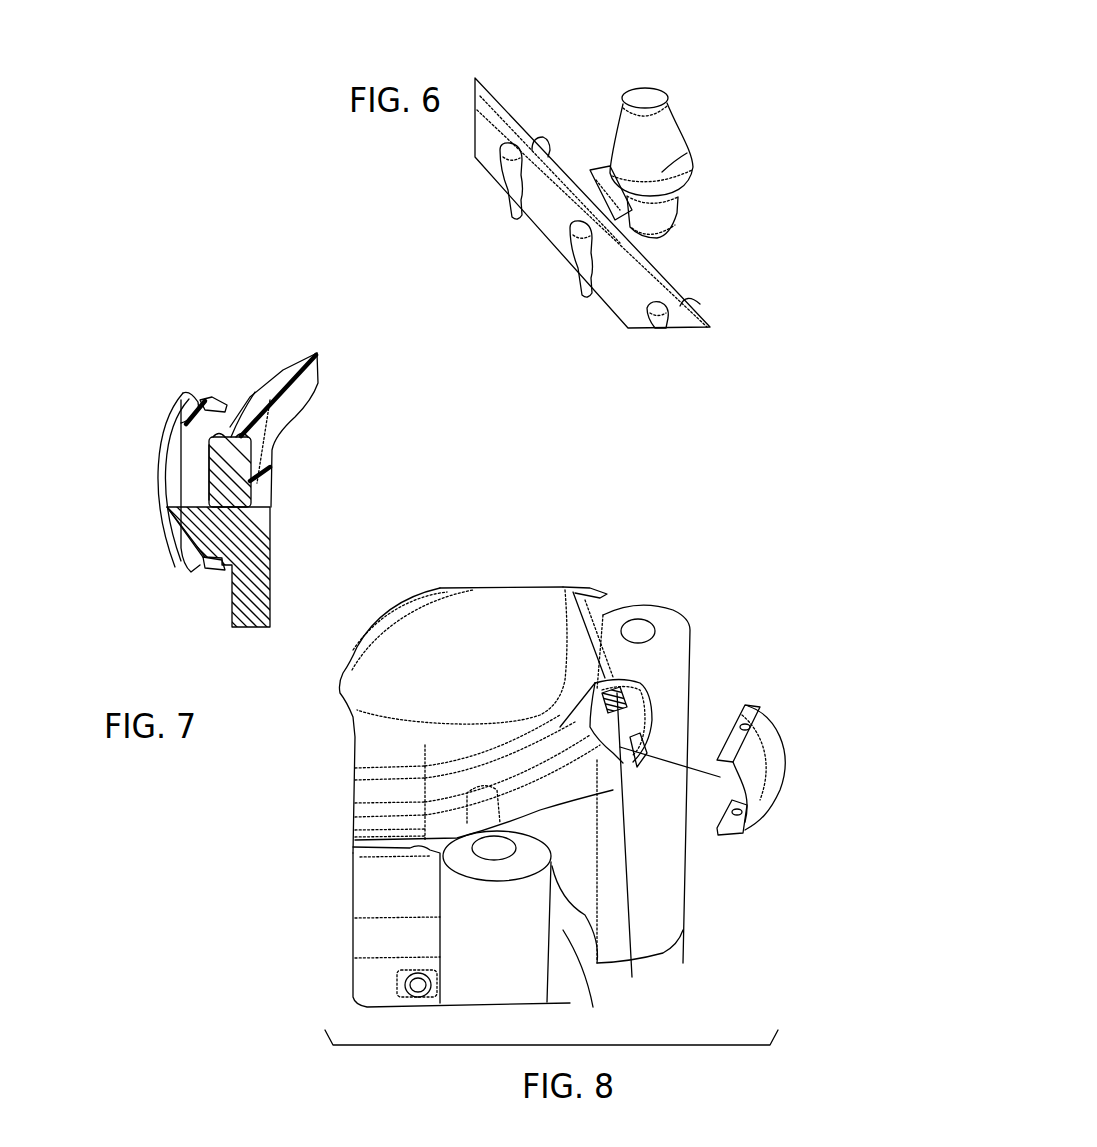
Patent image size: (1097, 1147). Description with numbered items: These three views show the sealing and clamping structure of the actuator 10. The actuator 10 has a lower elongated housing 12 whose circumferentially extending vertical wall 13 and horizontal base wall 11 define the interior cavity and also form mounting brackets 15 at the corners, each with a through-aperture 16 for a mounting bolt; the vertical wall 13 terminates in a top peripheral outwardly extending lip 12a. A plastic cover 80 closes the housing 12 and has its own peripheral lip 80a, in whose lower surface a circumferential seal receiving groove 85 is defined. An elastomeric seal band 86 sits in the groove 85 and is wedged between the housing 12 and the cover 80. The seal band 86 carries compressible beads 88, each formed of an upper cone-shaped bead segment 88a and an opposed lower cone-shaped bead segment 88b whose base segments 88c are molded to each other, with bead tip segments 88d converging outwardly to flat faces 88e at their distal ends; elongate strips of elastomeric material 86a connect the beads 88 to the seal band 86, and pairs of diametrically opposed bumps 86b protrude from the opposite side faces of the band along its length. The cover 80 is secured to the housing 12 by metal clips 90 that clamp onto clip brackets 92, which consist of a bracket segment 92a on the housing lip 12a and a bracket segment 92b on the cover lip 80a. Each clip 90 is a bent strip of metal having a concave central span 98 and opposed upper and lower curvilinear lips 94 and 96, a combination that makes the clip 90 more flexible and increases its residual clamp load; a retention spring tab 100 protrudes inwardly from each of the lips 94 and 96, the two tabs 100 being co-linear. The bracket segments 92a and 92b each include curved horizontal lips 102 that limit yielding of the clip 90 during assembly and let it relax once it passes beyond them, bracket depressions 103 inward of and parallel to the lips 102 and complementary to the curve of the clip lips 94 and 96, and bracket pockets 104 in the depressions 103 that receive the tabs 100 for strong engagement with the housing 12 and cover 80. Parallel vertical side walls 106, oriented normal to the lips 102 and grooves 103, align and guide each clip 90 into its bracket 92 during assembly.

In FIG. 7, the actuator 10 is at (185, 332).
In FIG. 8, the actuator 10 is at (540, 578).
In FIG. 8, the horizontal base wall 11 is at (668, 957).
In FIG. 7, the housing 12 is at (206, 585).
In FIG. 8, the housing 12 is at (537, 733).
In FIG. 7, the lip 12a is at (212, 525).
In FIG. 8, the lip 12a is at (378, 845).
In FIG. 7, the vertical wall 13 is at (247, 593).
In FIG. 8, the vertical wall 13 is at (563, 930).
In FIG. 8, the mounting brackets 15 is at (473, 923).
In FIG. 8, the through-aperture 16 is at (487, 855).
In FIG. 7, the cover 80 is at (212, 381).
In FIG. 8, the cover 80 is at (440, 662).
In FIG. 7, the lip 80a is at (253, 395).
In FIG. 8, the lip 80a is at (390, 812).
In FIG. 7, the seal receiving groove 85 is at (182, 422).
In FIG. 6, the seal band 86 is at (603, 222).
In FIG. 7, the seal band 86 is at (205, 488).
In FIG. 6, the elongate strips of elastomeric material 86a is at (593, 192).
In FIG. 6, the bumps 86b is at (545, 143).
In FIG. 6, the beads 88 is at (703, 160).
In FIG. 6, the upper cone-shaped compressible bead segment 88a is at (663, 175).
In FIG. 6, the lower cone-shaped compressible bead segment 88b is at (683, 203).
In FIG. 6, the base segments 88c is at (680, 157).
In FIG. 6, the bead tip segments 88d is at (658, 132).
In FIG. 6, the flat faces 88e is at (645, 100).
In FIG. 7, the clips 90 is at (143, 473).
In FIG. 8, the clips 90 is at (773, 752).
In FIG. 8, the clip brackets 92 is at (684, 651).
In FIG. 7, the bracket segment 92a is at (190, 533).
In FIG. 8, the bracket segment 92a is at (627, 767).
In FIG. 7, the bracket segment 92b is at (180, 410).
In FIG. 8, the bracket segment 92b is at (660, 695).
In FIG. 7, the upper lip 94 is at (192, 437).
In FIG. 8, the upper lip 94 is at (760, 713).
In FIG. 7, the lower lip 96 is at (183, 573).
In FIG. 8, the lower lip 96 is at (742, 828).
In FIG. 7, the central span 98 is at (152, 477).
In FIG. 8, the central span 98 is at (768, 765).
In FIG. 7, the retention spring tab 100 is at (208, 407).
In FIG. 8, the retention spring tab 100 is at (750, 727).
In FIG. 7, the lips 102 is at (193, 407).
In FIG. 8, the lips 102 is at (652, 705).
In FIG. 7, the bracket depressions 103 is at (296, 387).
In FIG. 8, the bracket depressions 103 is at (635, 690).
In FIG. 7, the bracket pockets 104 is at (232, 427).
In FIG. 8, the bracket pockets 104 is at (622, 665).
In FIG. 8, the vertical side walls 106 is at (662, 733).